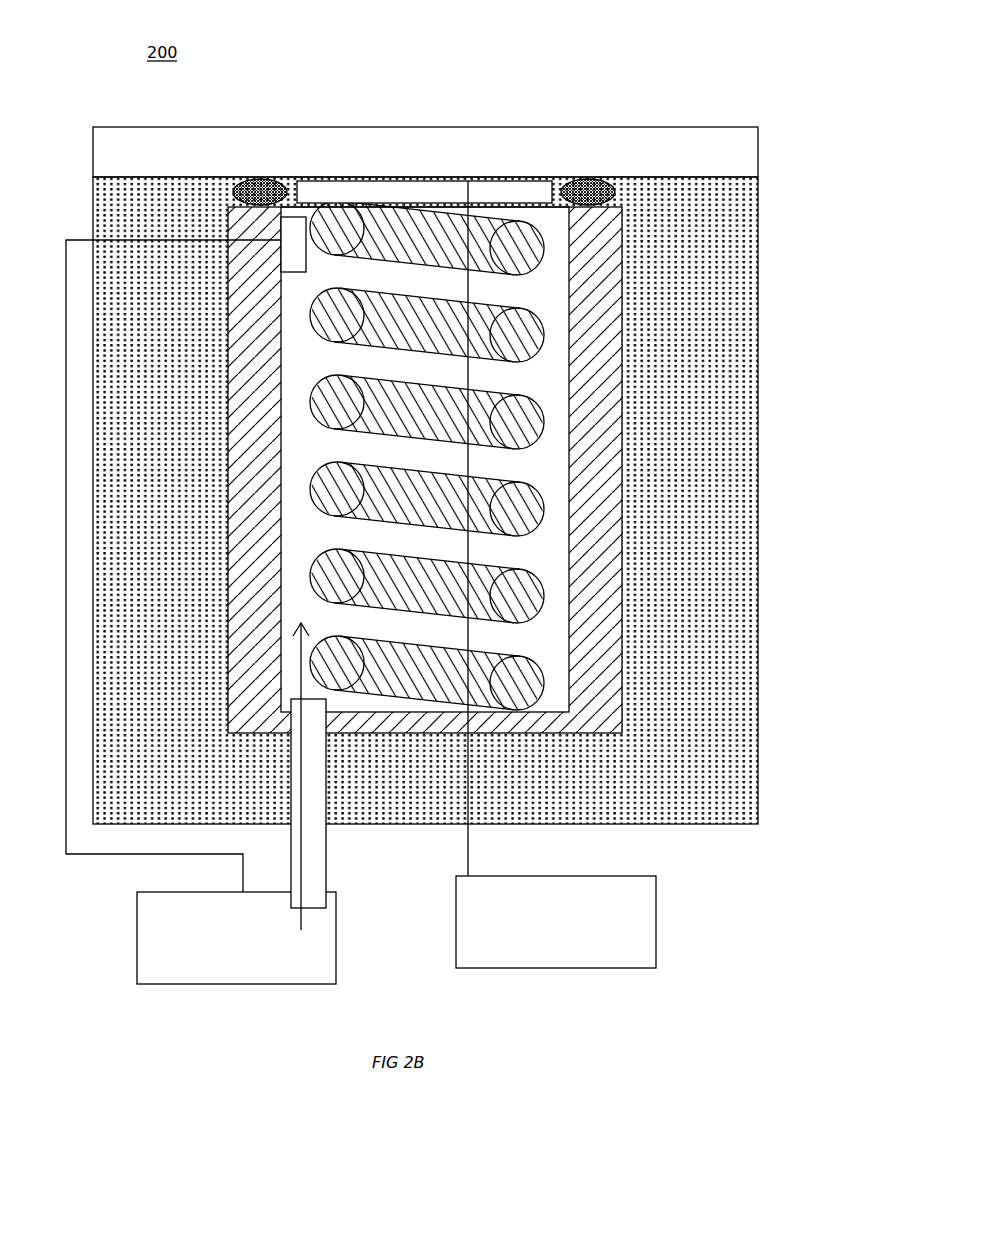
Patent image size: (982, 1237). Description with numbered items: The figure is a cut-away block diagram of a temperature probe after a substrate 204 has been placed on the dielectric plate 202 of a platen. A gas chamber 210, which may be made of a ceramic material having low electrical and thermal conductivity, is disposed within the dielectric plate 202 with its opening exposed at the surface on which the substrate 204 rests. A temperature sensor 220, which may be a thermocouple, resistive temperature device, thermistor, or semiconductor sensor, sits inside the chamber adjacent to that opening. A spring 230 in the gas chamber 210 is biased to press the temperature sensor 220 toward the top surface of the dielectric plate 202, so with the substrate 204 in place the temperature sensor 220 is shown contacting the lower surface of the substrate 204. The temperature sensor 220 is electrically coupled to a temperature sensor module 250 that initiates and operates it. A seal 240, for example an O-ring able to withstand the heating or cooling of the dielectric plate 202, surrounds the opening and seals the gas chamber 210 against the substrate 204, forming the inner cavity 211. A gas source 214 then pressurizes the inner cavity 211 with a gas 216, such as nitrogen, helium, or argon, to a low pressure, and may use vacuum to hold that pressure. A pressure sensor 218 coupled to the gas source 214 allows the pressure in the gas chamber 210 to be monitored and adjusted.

The dielectric plate 202 is at (172, 213).
The substrate 204 is at (172, 158).
The gas chamber 210 is at (602, 423).
The inner cavity 211 is at (331, 368).
The gas source 214 is at (137, 928).
The gas 216 is at (189, 925).
The pressure sensor 218 is at (290, 255).
The temperature sensor 220 is at (350, 186).
The spring 230 is at (530, 487).
The seal 240 is at (607, 181).
The temperature sensor module 250 is at (606, 911).